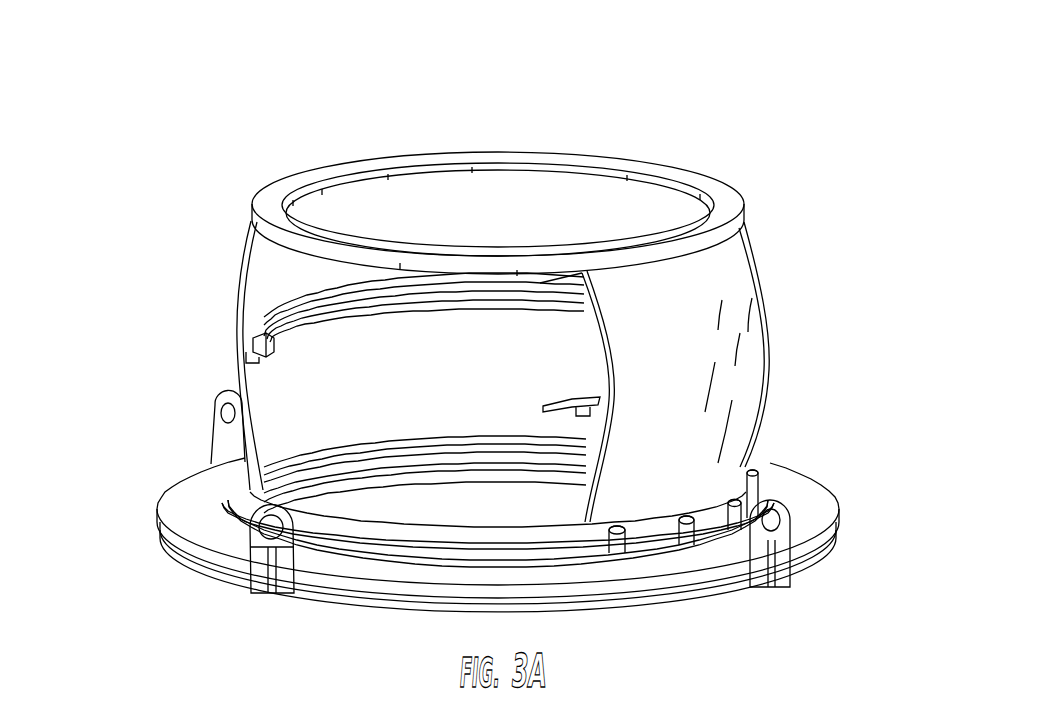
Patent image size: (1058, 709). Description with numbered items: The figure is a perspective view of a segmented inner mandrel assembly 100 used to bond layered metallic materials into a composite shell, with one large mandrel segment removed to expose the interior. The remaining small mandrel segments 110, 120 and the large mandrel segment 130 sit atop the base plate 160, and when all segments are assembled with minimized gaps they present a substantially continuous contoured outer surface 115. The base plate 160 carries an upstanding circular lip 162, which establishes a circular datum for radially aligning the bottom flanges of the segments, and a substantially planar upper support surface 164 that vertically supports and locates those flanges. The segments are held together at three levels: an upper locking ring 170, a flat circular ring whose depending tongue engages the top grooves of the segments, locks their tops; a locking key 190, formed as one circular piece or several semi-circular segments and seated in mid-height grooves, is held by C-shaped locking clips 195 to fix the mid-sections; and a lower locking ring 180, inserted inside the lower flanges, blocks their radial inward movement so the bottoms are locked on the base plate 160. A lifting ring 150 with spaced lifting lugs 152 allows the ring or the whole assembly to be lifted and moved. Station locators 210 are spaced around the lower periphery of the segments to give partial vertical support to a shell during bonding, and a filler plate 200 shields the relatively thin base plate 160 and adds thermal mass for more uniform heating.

The segmented inner mandrel assembly 100 is at (781, 145).
The mandrel segment 110 is at (738, 283).
The outer surface 115 is at (770, 334).
The mandrel segment 120 is at (237, 285).
The mandrel segment 130 is at (523, 188).
The lifting ring 150 is at (177, 560).
The lifting lugs 152 is at (785, 528).
The base plate 160 is at (400, 587).
The circular lip 162 is at (358, 513).
The upper support surface 164 is at (480, 560).
The upper locking ring 170 is at (358, 165).
The lower locking ring 180 is at (407, 532).
The locking key 190 is at (290, 327).
The C-shaped locking clips 195 is at (258, 360).
The filler plate 200 is at (183, 502).
The station locators 210 is at (752, 480).